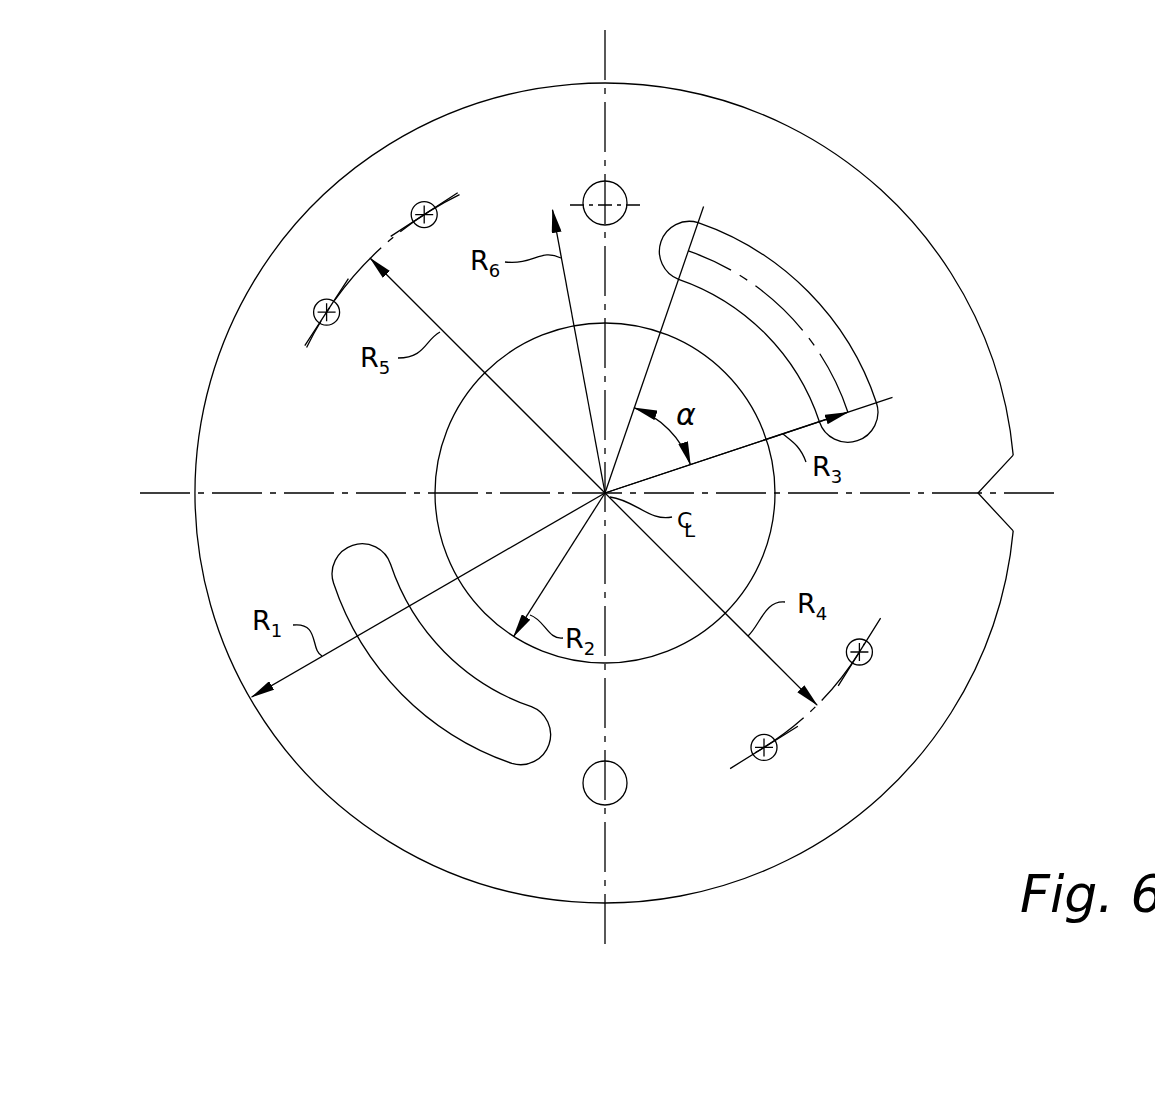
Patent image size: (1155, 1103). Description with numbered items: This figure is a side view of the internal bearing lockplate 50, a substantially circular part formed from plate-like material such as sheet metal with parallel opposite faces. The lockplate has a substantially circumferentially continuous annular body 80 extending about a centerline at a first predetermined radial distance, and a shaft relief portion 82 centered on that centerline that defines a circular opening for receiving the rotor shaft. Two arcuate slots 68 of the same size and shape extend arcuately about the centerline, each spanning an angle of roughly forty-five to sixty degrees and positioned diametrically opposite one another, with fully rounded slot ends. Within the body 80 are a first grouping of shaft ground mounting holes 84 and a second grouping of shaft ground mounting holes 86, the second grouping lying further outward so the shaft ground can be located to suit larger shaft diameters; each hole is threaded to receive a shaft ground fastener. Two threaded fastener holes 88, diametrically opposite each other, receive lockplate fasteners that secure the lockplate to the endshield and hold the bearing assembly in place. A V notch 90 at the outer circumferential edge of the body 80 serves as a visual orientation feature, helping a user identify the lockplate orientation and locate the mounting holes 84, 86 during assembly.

The internal bearing lockplate 50 is at (878, 112).
The arcuate slots 68 is at (855, 348).
The annular body 80 is at (906, 212).
The shaft relief portion 82 is at (773, 518).
The first grouping of shaft ground mounting holes 84 is at (860, 666).
The second grouping of shaft ground mounting holes 86 is at (325, 298).
The fastener holes 88 is at (612, 190).
The V notch 90 is at (1010, 468).